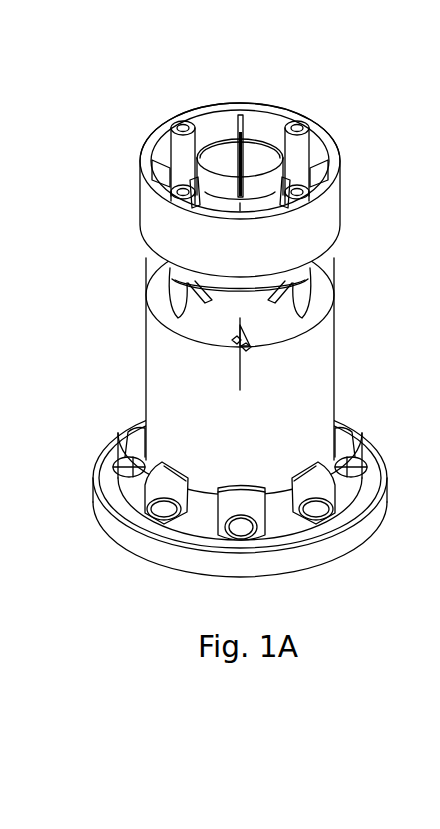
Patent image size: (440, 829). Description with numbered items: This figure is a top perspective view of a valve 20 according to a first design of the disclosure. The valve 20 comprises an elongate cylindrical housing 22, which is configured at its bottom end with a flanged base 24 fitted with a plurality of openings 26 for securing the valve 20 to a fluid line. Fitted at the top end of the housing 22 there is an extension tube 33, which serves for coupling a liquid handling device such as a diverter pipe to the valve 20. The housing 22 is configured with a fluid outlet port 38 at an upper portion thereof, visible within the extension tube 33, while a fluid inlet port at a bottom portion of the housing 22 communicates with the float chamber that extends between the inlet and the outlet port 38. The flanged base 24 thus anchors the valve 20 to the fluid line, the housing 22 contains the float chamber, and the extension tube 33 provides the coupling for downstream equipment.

The valve 20 is at (258, 320).
The elongate cylindrical housing 22 is at (182, 350).
The base flange 24 is at (263, 490).
The openings 26 is at (316, 510).
The extension tube 33 is at (211, 170).
The fluid outlet port 38 is at (222, 196).